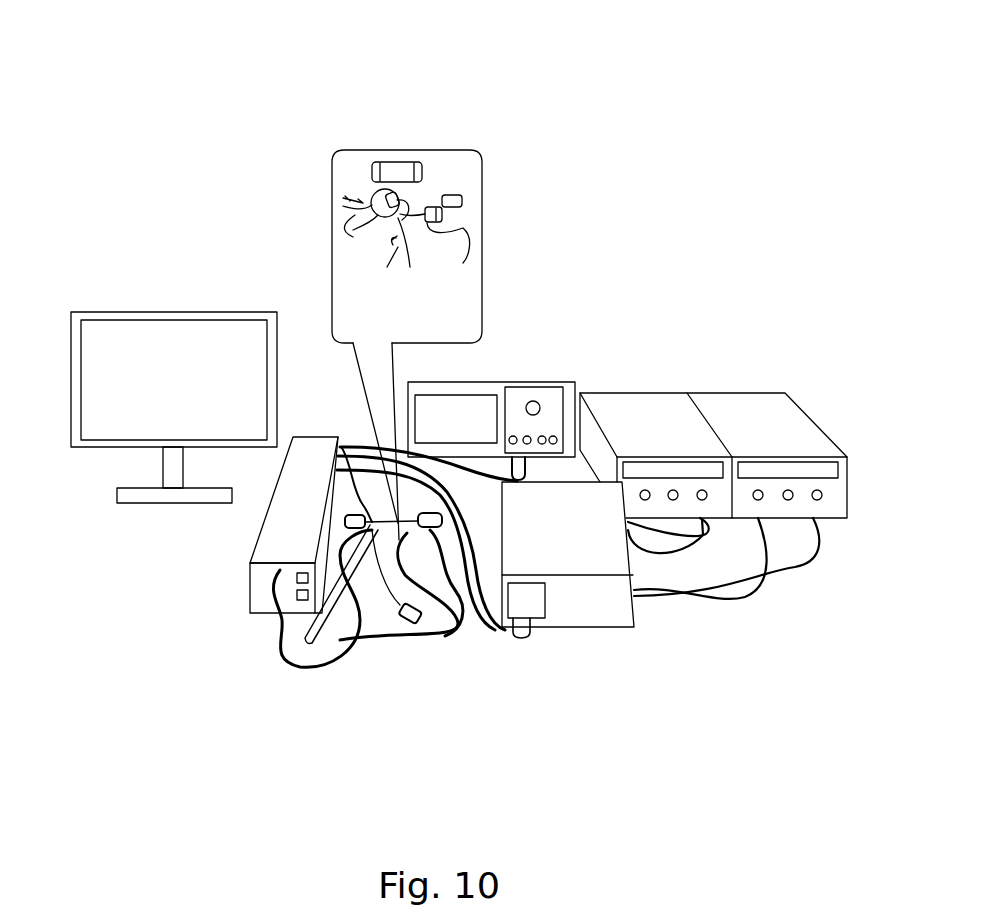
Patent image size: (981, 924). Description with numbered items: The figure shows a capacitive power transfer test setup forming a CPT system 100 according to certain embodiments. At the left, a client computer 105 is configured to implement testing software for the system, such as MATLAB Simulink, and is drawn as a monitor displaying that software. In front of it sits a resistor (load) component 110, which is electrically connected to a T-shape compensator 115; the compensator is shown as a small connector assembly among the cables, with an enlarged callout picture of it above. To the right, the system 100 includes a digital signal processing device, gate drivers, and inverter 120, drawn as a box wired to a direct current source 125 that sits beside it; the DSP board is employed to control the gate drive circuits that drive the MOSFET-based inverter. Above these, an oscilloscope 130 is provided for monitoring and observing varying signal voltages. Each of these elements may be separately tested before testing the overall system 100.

The CPT system 100 is at (480, 92).
The client computer 105 is at (108, 330).
The resistor (load) component 110 is at (277, 573).
The T-shape compensator 115 is at (398, 545).
The digital signal processing (DSP) device, gate drivers, and/or inverter 120 is at (613, 567).
The direct current (DC) source 125 is at (820, 445).
The oscilloscope 130 is at (483, 392).